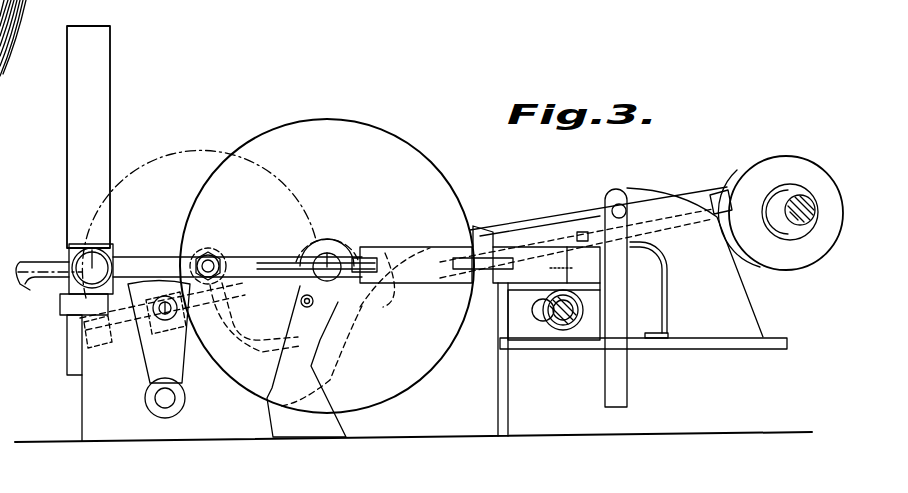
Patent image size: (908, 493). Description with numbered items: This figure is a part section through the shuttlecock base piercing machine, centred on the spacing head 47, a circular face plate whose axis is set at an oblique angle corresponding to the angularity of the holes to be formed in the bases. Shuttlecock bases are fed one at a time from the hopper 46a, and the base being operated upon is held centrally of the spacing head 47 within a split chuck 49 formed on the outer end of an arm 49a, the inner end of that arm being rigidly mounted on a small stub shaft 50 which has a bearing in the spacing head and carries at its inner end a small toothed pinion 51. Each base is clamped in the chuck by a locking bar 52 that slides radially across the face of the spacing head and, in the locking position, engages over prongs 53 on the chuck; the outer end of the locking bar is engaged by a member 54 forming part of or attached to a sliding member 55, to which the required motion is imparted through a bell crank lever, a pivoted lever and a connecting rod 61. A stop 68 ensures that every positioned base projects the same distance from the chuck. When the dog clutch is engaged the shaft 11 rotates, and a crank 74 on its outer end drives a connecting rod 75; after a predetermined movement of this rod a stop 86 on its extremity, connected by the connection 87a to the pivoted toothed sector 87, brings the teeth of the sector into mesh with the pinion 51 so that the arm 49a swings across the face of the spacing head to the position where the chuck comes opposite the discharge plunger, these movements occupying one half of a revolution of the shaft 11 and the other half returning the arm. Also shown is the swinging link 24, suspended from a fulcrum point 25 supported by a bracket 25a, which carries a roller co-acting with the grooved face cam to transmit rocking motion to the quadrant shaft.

The shaft 11 is at (806, 210).
The swinging link 24 is at (617, 378).
The fulcrum point 25 is at (627, 207).
The bracket 25a is at (633, 190).
The hopper 46a is at (111, 117).
The spacing head 47 is at (344, 132).
The split chuck 49 is at (98, 252).
The arm 49a is at (149, 256).
The stub shaft 50 is at (220, 256).
The toothed pinion 51 is at (209, 247).
The locking bar 52 is at (430, 248).
The prongs 53 is at (36, 278).
The member 54 is at (490, 260).
The sliding member 55 is at (547, 234).
The connecting rod 61 is at (548, 282).
The stop 68 is at (356, 320).
The crank 74 is at (789, 165).
The connecting rod 75 is at (584, 231).
The stop 86 is at (101, 348).
The pivoted toothed sector 87 is at (178, 357).
The connection 87a is at (167, 322).